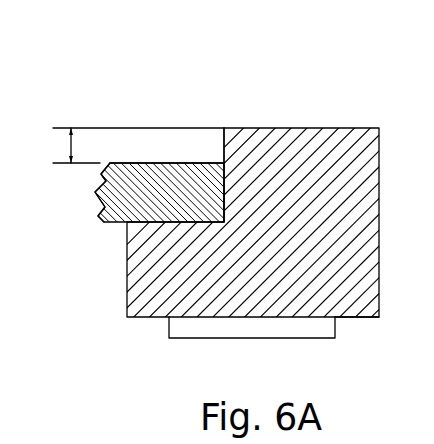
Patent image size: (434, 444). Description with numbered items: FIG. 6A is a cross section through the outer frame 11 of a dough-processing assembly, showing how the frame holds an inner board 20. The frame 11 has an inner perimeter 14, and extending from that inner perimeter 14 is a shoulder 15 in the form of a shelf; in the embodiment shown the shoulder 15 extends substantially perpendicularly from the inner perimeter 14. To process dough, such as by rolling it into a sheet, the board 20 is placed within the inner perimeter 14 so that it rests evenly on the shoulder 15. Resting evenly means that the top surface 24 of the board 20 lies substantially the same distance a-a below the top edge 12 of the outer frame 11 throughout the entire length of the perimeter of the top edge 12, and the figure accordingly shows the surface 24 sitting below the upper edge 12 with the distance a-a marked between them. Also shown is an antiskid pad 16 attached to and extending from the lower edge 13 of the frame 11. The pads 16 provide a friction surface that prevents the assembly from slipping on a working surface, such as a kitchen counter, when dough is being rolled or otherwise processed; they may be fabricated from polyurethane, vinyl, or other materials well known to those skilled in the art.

The outer frame 11 is at (305, 80).
The top edge 12 is at (323, 128).
The lower edge 13 is at (349, 319).
The inner perimeter 14 is at (224, 142).
The shoulder 15 is at (155, 222).
The antiskid pads 16 is at (192, 338).
The board 20 is at (173, 182).
The top surface 24 is at (188, 163).
The distance a- a is at (130, 143).